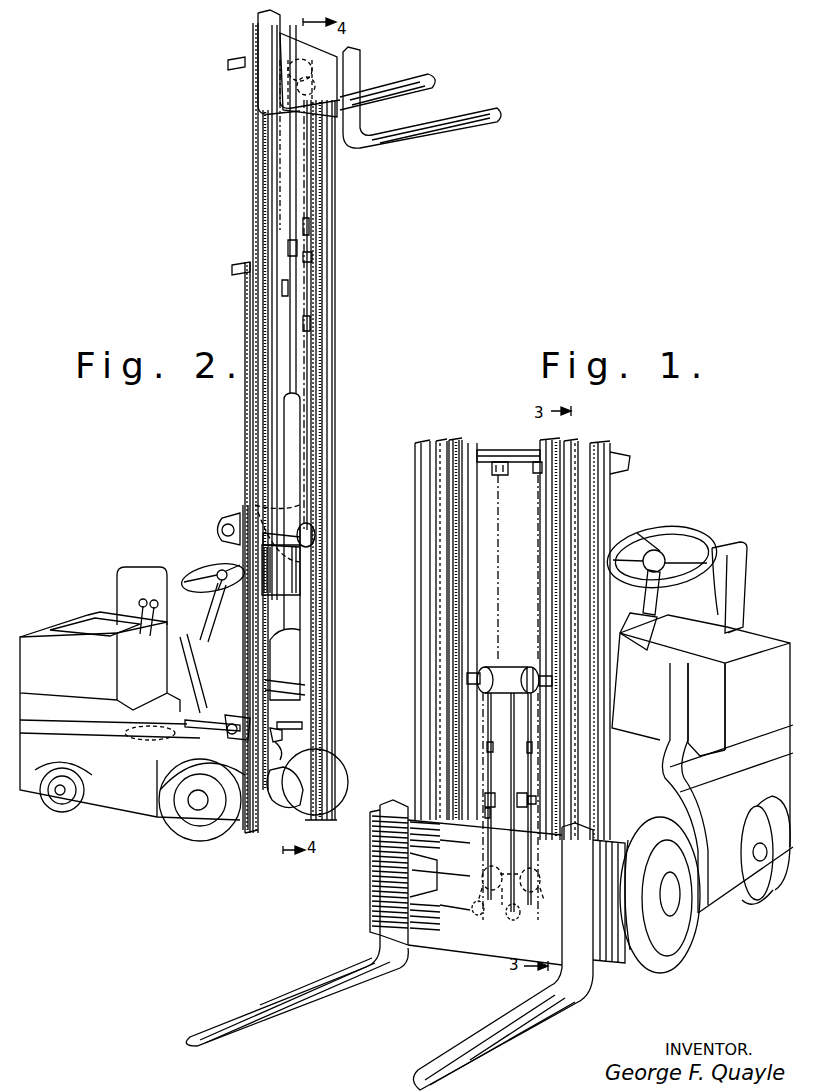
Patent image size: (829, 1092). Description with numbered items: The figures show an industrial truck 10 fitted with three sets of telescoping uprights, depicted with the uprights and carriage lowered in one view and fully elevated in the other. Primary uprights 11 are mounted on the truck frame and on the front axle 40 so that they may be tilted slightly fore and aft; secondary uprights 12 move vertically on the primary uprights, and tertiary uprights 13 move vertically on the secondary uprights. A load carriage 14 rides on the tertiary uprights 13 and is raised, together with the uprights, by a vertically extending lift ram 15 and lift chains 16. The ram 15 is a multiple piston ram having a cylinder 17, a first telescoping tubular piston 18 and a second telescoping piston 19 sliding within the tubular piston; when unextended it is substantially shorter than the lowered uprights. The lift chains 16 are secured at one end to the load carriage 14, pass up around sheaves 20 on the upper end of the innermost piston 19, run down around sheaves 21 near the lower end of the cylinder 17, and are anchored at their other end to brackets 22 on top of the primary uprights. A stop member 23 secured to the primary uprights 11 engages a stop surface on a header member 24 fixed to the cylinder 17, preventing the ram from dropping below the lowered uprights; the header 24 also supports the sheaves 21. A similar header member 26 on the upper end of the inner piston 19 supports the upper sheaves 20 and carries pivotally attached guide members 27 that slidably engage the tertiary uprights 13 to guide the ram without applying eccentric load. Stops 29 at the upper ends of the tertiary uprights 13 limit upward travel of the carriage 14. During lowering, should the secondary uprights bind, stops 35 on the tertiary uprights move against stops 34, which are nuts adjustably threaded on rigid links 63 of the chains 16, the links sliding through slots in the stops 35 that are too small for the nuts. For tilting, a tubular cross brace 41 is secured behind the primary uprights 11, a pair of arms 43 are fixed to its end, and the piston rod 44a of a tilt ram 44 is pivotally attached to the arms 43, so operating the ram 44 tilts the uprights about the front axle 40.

In FIG. 2, the industrial truck 10 is at (155, 549).
In FIG. 1, the industrial truck 10 is at (703, 531).
In FIG. 2, the primary uprights 11 is at (332, 652).
In FIG. 1, the primary uprights 11 is at (416, 454).
In FIG. 2, the secondary uprights 12 is at (271, 420).
In FIG. 1, the secondary uprights 12 is at (425, 441).
In FIG. 2, the tertiary uprights 13 is at (278, 355).
In FIG. 1, the tertiary uprights 13 is at (446, 441).
In FIG. 2, the load carriage 14 is at (328, 58).
In FIG. 1, the load carriage 14 is at (445, 932).
In FIG. 2, the lift ram 15 is at (298, 492).
In FIG. 2, the lift chains 16 is at (278, 170).
In FIG. 1, the lift chains 16 is at (510, 713).
In FIG. 2, the cylinder 17 is at (295, 452).
In FIG. 2, the first telescoping tubular piston 18 is at (292, 380).
In FIG. 2, the second telescoping piston 19 is at (293, 198).
In FIG. 2, the sheaves 20 is at (301, 62).
In FIG. 1, the sheaves 20 is at (529, 665).
In FIG. 2, the sheaves 21 is at (312, 542).
In FIG. 1, the sheaves 21 is at (482, 872).
In FIG. 2, the brackets 22 is at (258, 515).
In FIG. 1, the brackets 22 is at (537, 474).
In FIG. 2, the stop member 23 is at (282, 741).
In FIG. 2, the header member 24 is at (300, 596).
In FIG. 1, the header member 24 is at (493, 893).
In FIG. 1, the header member 26 is at (510, 665).
In FIG. 1, the guide members 27 is at (552, 683).
In FIG. 1, the stops 29 is at (545, 445).
In FIG. 2, the stops 34 is at (310, 322).
In FIG. 1, the stops 34 is at (530, 812).
In FIG. 2, the stops 35 is at (308, 258).
In FIG. 1, the stops 35 is at (518, 810).
In FIG. 2, the front axle 40 is at (290, 797).
In FIG. 2, the tubular cross brace 41 is at (302, 725).
In FIG. 2, the arms 43 is at (253, 726).
In FIG. 2, the tilt ram 44 is at (155, 742).
In FIG. 2, the piston rod 44a is at (218, 716).
In FIG. 2, the rigid links 63 is at (283, 288).
In FIG. 1, the rigid links 63 is at (490, 786).